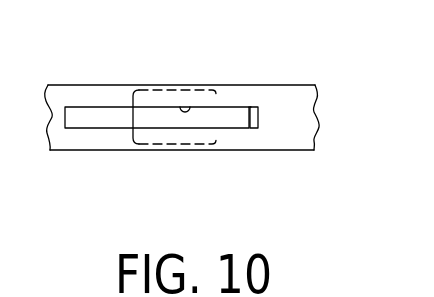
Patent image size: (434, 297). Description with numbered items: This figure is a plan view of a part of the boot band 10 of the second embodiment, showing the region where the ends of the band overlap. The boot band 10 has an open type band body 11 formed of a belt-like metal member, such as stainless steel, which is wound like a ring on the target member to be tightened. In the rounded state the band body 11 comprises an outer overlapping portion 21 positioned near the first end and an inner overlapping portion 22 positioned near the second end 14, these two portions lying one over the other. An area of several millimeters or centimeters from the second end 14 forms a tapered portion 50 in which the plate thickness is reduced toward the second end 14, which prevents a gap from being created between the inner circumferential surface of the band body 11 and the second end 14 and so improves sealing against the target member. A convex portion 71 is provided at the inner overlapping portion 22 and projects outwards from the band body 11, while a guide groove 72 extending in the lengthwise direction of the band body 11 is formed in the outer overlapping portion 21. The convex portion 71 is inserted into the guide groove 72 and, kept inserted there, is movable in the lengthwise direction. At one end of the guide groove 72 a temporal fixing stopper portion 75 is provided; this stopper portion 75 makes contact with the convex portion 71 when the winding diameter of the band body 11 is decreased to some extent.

The boot band 10 is at (301, 68).
The band body 11 is at (288, 137).
The second end 14 is at (131, 115).
The outer overlapping portion 21 is at (227, 95).
The inner overlapping portion 22 is at (230, 140).
The tapered portion 50 is at (146, 89).
The convex portion 71 is at (249, 107).
The guide groove 72 is at (180, 107).
The temporal fixing stopper portion 75 is at (258, 110).